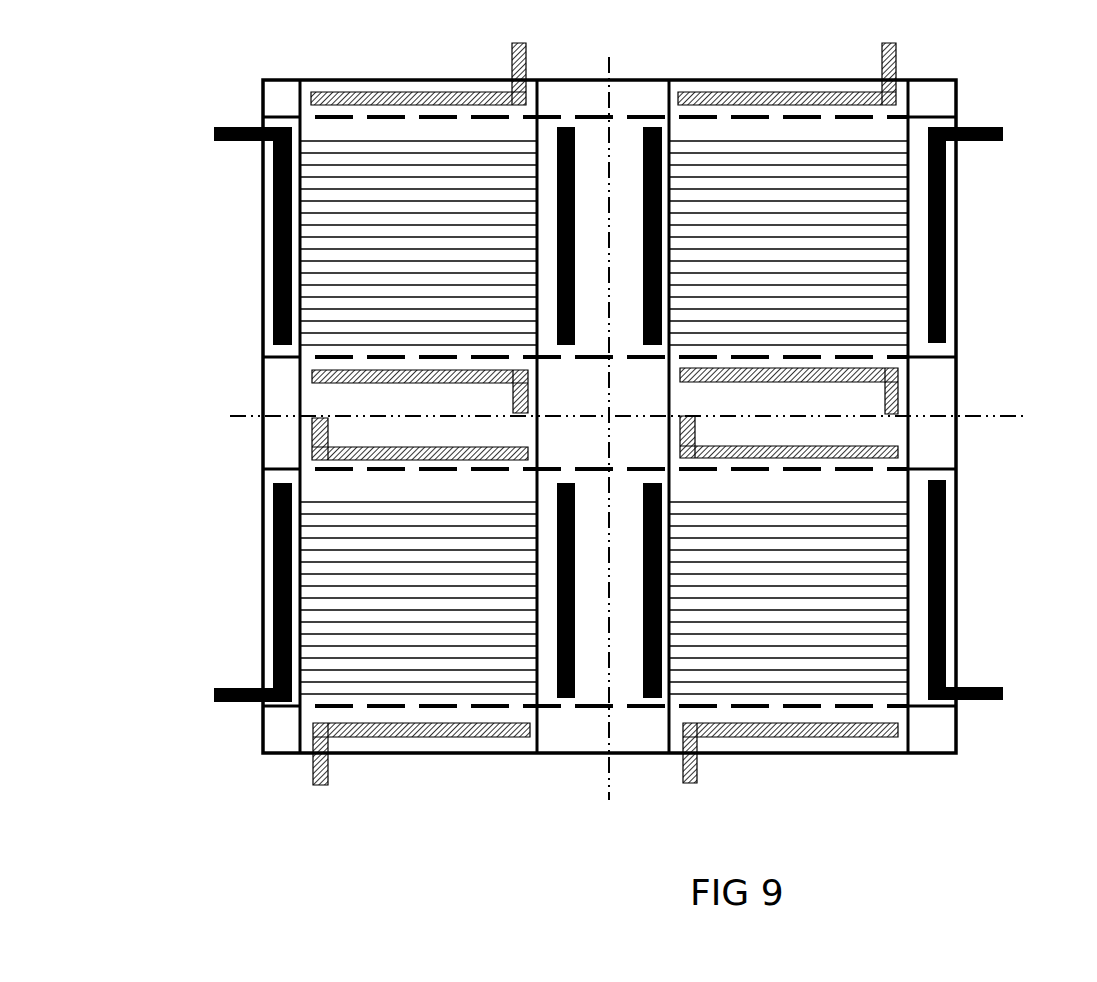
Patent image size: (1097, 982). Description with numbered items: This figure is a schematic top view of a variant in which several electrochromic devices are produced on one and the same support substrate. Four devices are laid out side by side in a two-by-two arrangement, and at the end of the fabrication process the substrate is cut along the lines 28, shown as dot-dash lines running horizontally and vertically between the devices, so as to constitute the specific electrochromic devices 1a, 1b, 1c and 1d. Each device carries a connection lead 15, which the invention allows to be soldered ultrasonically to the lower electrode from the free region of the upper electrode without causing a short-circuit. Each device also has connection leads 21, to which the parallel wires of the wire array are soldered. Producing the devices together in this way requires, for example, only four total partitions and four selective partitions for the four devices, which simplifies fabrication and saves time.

The electrochromic device 1a is at (241, 236).
The electrochromic device 1b is at (977, 244).
The electrochromic device 1c is at (979, 560).
The electrochromic device 1d is at (240, 590).
The connection lead 15 is at (377, 96).
The connection leads 21 is at (218, 701).
The cutting lines 28 is at (240, 417).